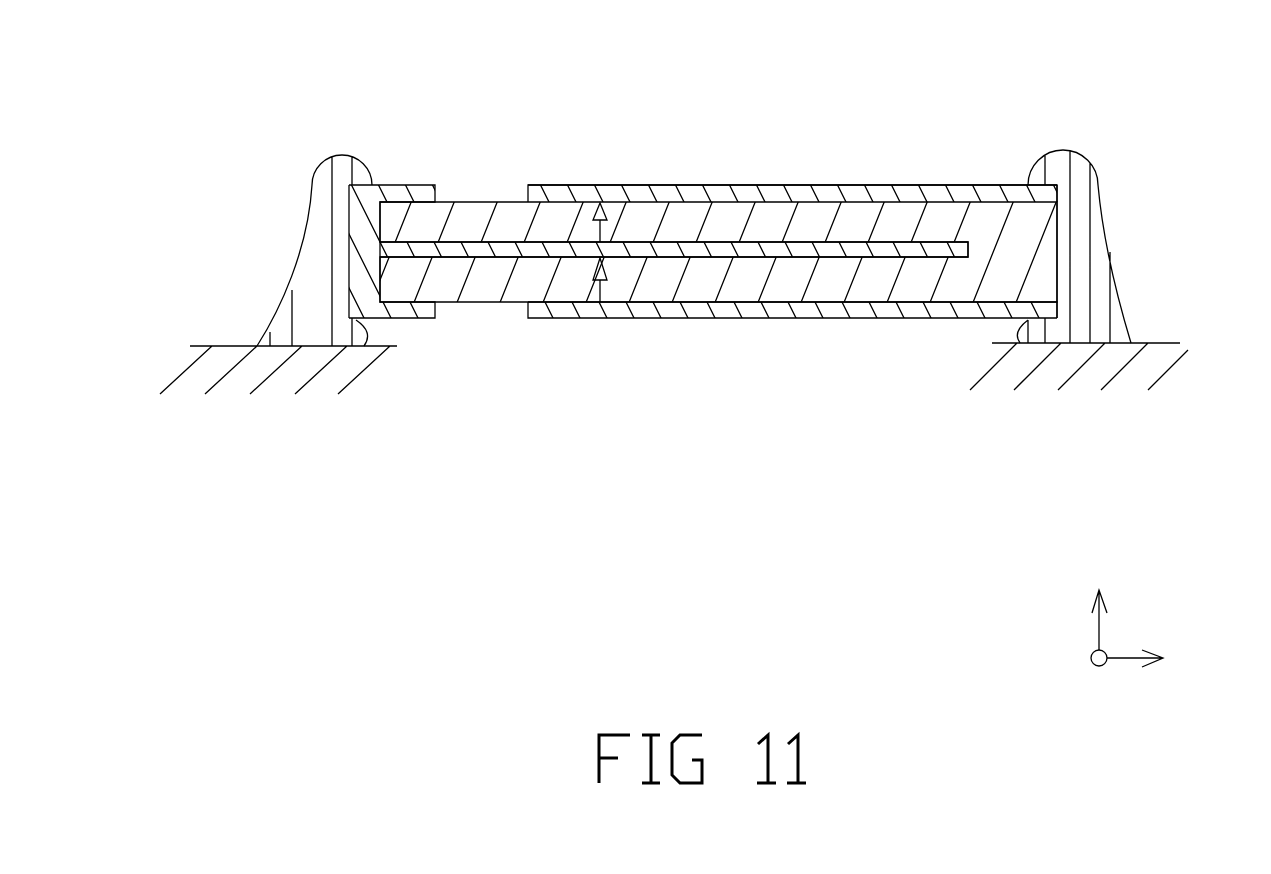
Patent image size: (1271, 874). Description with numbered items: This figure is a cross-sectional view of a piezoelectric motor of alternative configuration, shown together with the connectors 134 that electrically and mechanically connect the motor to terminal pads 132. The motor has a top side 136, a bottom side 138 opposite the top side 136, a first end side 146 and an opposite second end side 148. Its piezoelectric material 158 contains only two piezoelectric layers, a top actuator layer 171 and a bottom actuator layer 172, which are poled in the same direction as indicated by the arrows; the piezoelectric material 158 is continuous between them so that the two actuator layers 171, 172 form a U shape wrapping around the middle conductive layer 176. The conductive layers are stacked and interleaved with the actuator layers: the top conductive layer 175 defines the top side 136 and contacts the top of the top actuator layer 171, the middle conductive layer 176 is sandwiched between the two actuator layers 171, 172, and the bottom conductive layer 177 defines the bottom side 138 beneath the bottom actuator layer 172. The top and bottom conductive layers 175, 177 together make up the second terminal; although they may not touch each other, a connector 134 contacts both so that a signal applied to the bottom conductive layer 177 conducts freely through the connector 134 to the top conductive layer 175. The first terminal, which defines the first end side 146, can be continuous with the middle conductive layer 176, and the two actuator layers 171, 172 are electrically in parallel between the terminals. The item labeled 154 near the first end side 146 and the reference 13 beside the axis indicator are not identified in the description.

The coordinate system 13 is at (1113, 693).
The terminal pads 132 is at (208, 382).
The connectors 134 is at (307, 295).
The top side 136 is at (603, 185).
The bottom side 138 is at (550, 316).
The first end side 146 is at (349, 212).
The second end side 148 is at (1057, 205).
The holder 154 is at (394, 186).
The piezoelectric material 158 is at (475, 215).
The top actuator layer 171 is at (877, 220).
The bottom actuator layer 172 is at (827, 280).
The top conductive layer 175 is at (742, 197).
The middle conductive layer 176 is at (725, 250).
The bottom conductive layer 177 is at (933, 310).